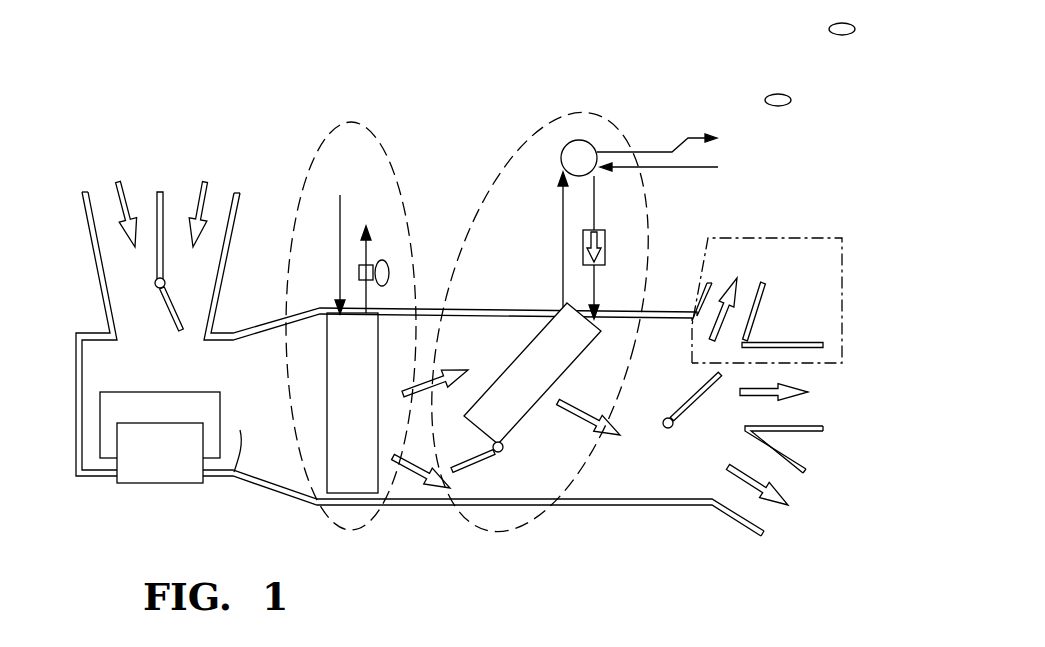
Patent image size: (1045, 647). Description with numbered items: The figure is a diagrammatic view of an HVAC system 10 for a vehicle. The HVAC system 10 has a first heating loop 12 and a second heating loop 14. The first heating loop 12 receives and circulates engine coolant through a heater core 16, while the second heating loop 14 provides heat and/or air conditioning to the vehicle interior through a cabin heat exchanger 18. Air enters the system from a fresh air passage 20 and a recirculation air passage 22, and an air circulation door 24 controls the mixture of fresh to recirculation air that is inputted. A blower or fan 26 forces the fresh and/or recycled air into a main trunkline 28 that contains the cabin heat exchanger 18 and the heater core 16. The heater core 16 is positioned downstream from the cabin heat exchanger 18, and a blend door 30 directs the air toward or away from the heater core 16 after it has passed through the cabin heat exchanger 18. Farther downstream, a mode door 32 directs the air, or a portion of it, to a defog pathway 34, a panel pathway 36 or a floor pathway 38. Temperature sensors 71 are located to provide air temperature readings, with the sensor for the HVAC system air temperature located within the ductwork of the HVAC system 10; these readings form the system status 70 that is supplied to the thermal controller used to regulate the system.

The HVAC system 10 is at (527, 103).
The first heating loop 12 is at (623, 124).
The second heating loop 14 is at (380, 143).
The heater core 16 is at (533, 410).
The cabin heat exchanger 18 is at (306, 482).
The fresh air passage 20 is at (110, 302).
The recirculation air passage 22 is at (216, 290).
The air circulation door 24 is at (177, 313).
The blower 26 is at (135, 475).
The main trunkline 28 is at (287, 486).
The blend door 30 is at (468, 466).
The mode door 32 is at (711, 388).
The defog pathway 34 is at (750, 314).
The panel pathway 36 is at (788, 426).
The floor pathway 38 is at (752, 517).
The system status 70 is at (385, 262).
The temperature sensors 71 is at (232, 475).